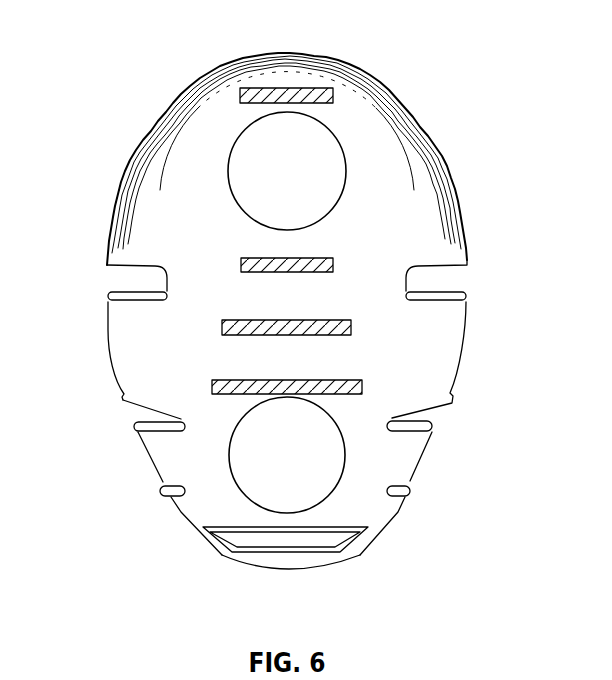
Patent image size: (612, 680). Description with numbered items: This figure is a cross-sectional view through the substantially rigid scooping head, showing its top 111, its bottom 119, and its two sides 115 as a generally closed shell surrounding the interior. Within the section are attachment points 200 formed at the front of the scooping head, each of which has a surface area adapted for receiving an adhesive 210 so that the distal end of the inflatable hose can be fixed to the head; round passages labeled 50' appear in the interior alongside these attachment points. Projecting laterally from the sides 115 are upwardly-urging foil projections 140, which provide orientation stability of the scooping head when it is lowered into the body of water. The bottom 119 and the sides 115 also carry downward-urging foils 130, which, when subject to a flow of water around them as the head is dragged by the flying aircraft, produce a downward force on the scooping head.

The top 111 is at (283, 53).
The sides 115 is at (107, 325).
The bottom 119 is at (287, 555).
The downward-urging foil 130 is at (162, 488).
The upwardly-urging foil projection 140 is at (108, 294).
The attachment points 200 is at (318, 88).
The adhesive 210 is at (232, 320).
The cable 50' is at (287, 312).